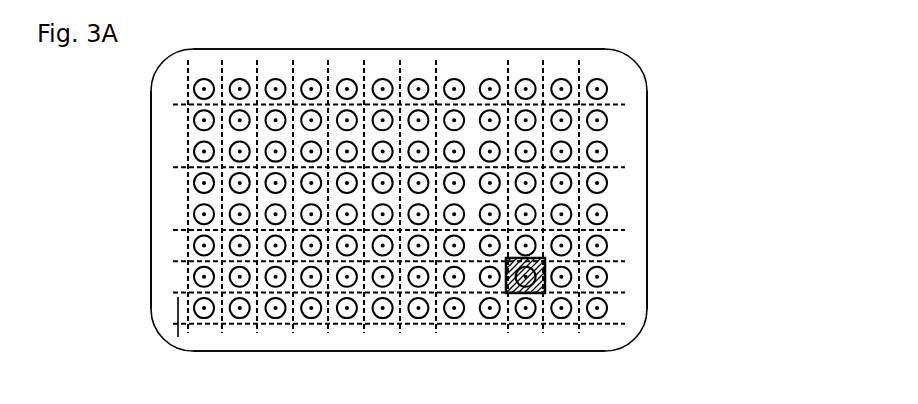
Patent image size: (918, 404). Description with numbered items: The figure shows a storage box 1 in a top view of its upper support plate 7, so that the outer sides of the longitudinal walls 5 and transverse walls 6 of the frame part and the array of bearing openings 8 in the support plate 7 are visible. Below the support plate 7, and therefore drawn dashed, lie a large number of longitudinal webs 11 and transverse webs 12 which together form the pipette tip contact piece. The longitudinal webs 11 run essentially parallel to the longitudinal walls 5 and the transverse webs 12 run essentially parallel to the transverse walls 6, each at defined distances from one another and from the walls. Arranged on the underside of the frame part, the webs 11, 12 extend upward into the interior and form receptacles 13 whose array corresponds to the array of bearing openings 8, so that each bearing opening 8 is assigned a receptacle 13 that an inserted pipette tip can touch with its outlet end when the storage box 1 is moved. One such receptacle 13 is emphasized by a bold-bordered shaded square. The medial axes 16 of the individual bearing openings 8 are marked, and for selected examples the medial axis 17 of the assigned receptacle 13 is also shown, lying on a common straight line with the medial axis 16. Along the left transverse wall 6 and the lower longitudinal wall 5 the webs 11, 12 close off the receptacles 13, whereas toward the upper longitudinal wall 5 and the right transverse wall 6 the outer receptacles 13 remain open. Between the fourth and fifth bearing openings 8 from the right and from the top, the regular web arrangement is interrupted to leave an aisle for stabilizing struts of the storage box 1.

The storage box 1 is at (740, 66).
The longitudinal wall 5 is at (387, 49).
The transverse wall 6 is at (151, 223).
The upper support plate 7 is at (644, 192).
The bearing opening 8 is at (187, 89).
The longitudinal web 11 is at (178, 337).
The transverse web 12 is at (185, 268).
The receptacle 13 is at (553, 348).
The medial axis of bearing opening 16 is at (457, 86).
The medial axis of receptacle 17 is at (520, 283).